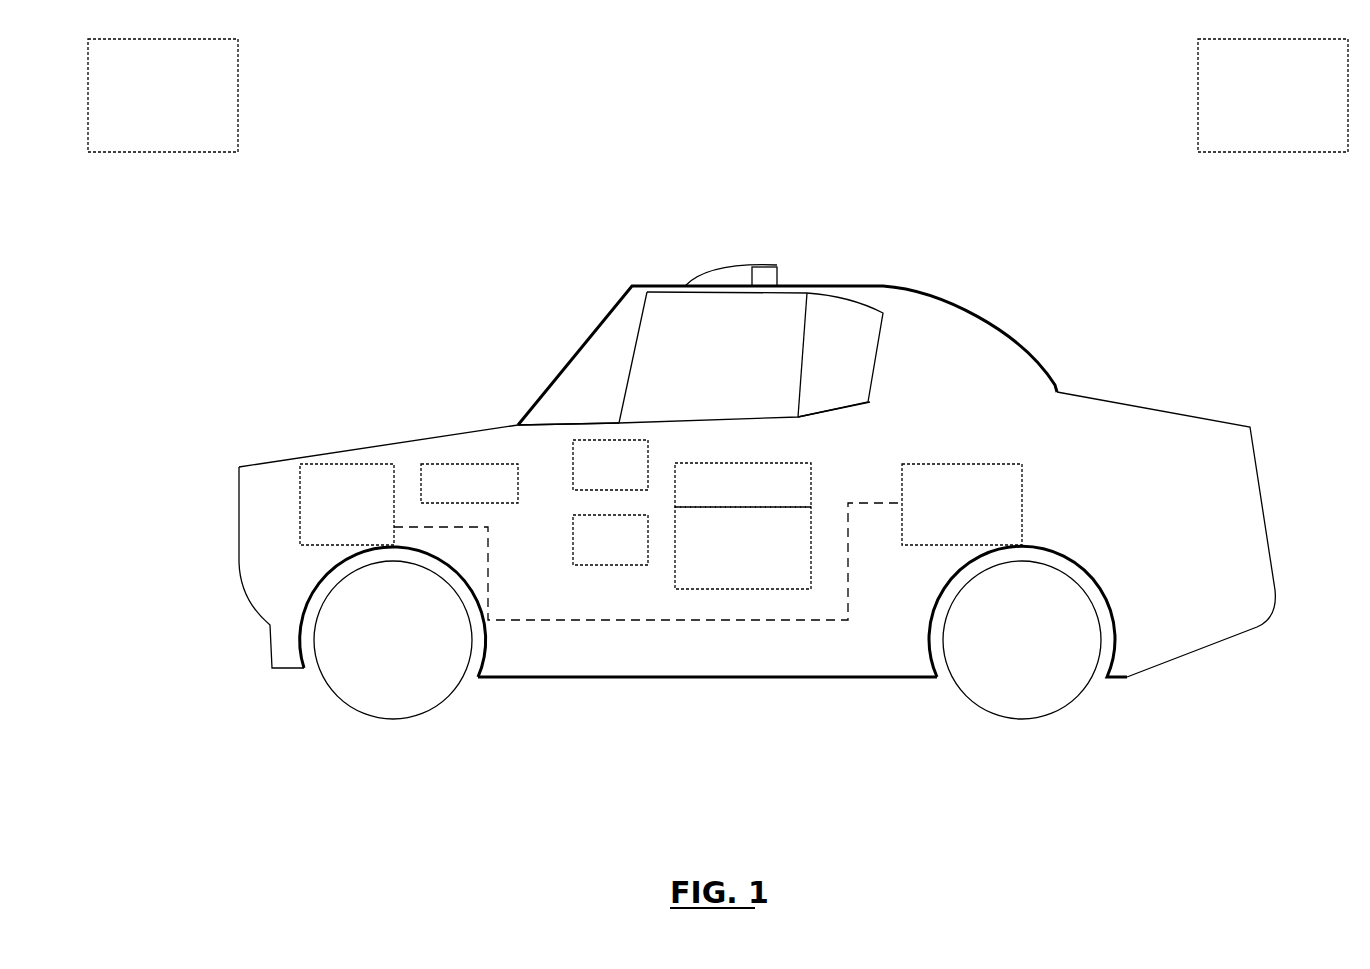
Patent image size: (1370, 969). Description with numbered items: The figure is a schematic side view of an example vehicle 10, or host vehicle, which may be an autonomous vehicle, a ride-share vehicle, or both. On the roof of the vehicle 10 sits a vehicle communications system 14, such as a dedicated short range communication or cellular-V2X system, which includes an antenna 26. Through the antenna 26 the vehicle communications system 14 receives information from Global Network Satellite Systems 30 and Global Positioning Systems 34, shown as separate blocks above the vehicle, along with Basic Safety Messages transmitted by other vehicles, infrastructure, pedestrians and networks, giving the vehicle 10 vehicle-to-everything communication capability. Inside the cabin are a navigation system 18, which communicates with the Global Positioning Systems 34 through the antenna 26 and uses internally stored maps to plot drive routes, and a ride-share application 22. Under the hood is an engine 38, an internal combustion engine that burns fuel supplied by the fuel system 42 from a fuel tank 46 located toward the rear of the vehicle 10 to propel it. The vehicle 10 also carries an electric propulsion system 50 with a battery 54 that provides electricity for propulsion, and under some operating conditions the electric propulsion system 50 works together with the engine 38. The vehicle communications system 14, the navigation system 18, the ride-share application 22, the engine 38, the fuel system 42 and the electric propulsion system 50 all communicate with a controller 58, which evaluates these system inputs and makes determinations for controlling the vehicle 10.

The vehicle 10 is at (1160, 410).
The vehicle communications system 14 is at (728, 267).
The navigation system 18 is at (550, 497).
The ride-share application 22 is at (572, 540).
The antenna 26 is at (770, 275).
The Global Network Satellite Systems 30 is at (238, 95).
The Global Positioning Systems 34 is at (1198, 95).
The engine 38 is at (348, 466).
The fuel system 42 is at (702, 628).
The fuel tank 46 is at (1022, 508).
The electric propulsion system 50 is at (815, 490).
The battery 54 is at (815, 552).
The controller 58 is at (518, 492).